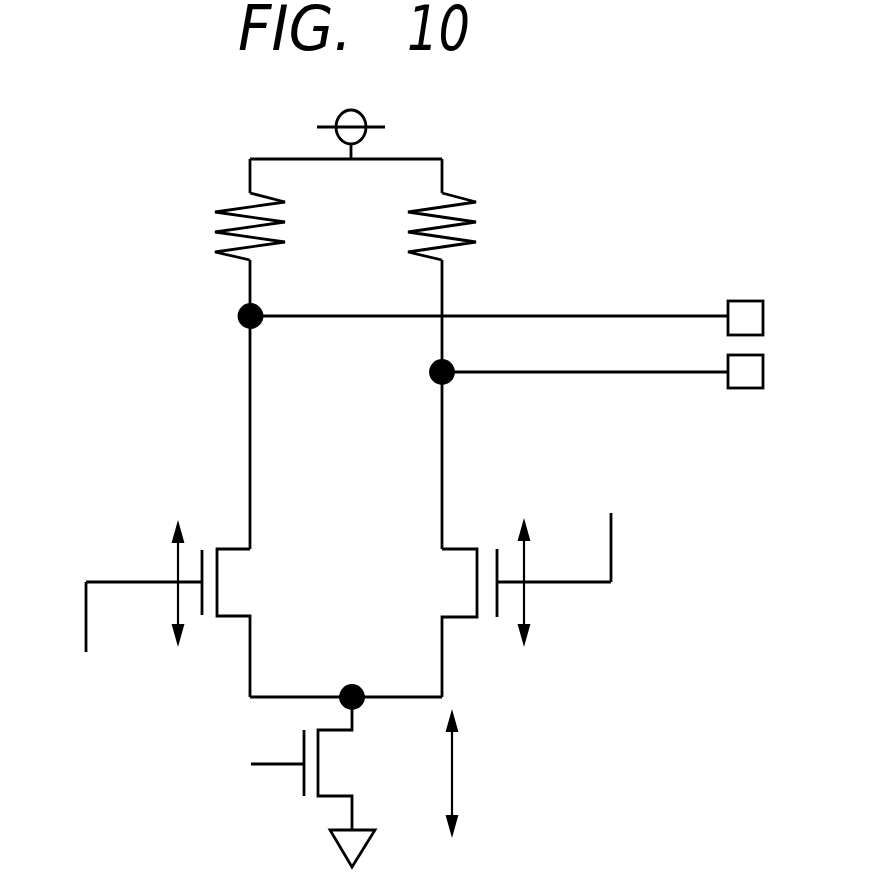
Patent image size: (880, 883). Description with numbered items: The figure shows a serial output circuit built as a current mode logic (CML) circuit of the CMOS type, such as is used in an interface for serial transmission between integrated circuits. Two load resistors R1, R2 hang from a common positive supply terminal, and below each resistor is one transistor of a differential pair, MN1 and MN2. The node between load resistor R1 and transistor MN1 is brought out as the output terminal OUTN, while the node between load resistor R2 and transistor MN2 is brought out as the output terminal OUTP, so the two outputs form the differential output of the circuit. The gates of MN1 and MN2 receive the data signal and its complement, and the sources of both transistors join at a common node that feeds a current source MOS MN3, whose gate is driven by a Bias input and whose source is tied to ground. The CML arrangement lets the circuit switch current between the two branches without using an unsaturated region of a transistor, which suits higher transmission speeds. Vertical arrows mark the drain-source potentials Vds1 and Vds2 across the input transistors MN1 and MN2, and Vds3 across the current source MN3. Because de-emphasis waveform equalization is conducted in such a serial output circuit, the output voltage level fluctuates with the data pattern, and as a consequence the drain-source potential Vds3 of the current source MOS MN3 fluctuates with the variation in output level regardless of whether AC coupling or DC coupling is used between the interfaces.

The load resistor R1 is at (224, 226).
The load resistor R2 is at (470, 226).
The input MOS transistor MN1 is at (186, 623).
The input MOS transistor MN2 is at (507, 623).
The current source MOS MN3 is at (348, 782).
The negative output terminal OUTN is at (529, 294).
The positive output terminal OUTP is at (625, 395).
The drain-source potential of MN1 Vds1 is at (140, 583).
The drain-source potential of MN2 Vds2 is at (561, 582).
The drain-source potential of current source MOS Vds3 is at (490, 773).
The bias input Bias is at (245, 766).